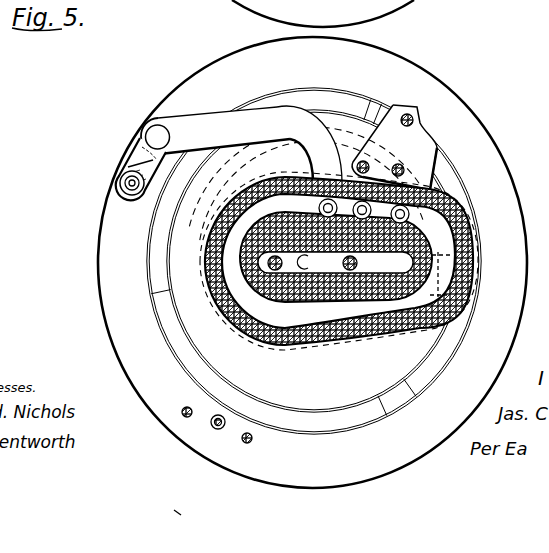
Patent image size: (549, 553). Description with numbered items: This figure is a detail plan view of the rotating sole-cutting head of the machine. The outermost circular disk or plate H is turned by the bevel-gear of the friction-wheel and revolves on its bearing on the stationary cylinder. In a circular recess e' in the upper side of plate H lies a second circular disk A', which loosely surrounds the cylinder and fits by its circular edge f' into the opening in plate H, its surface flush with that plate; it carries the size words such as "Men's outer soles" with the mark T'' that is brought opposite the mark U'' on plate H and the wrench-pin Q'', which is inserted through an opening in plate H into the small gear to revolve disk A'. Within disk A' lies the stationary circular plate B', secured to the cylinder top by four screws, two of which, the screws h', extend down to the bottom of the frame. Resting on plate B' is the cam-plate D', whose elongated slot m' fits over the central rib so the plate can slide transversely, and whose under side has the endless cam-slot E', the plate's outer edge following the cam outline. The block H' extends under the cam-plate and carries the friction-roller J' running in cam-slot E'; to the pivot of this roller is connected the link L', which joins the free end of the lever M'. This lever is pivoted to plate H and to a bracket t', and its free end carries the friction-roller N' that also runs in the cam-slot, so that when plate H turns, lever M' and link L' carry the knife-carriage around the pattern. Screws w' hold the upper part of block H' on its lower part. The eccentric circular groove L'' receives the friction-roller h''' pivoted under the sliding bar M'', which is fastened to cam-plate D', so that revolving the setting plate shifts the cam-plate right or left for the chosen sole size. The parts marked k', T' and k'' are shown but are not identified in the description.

The circular disk or plate H is at (312, 262).
The circular plate or disk A' is at (248, 217).
The cam-plate D' is at (333, 261).
The cam-slot E' is at (324, 261).
The inner hatched block k' is at (340, 257).
The screws h' is at (335, 262).
The friction-roller h''' is at (441, 274).
The friction-roller N' is at (348, 208).
The friction-roller J' is at (376, 213).
The block H' is at (413, 147).
The lever M' is at (241, 144).
The link L' is at (309, 144).
The pivot pin T' is at (168, 136).
The bracket t' is at (136, 164).
The screws w' is at (120, 179).
The lower block edge k'' is at (295, 317).
The bar M'' is at (329, 320).
The elongated slot m' is at (364, 317).
The circular groove L'' is at (300, 367).
The circular plate B' is at (331, 363).
The circular recess e' is at (484, 315).
The circular edge f' is at (428, 354).
The mark T'' is at (233, 400).
The mark U'' is at (194, 405).
The wrench-pin Q'' is at (236, 437).